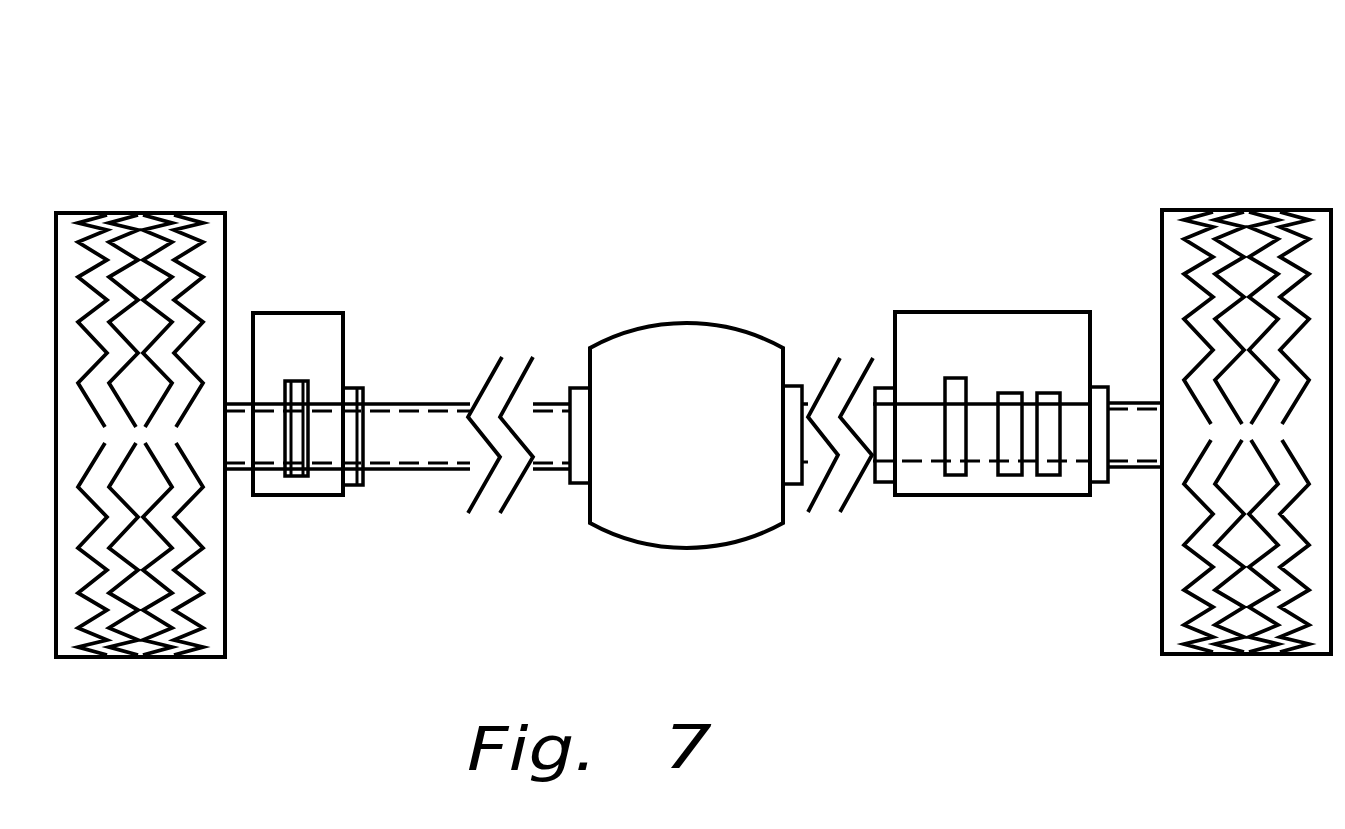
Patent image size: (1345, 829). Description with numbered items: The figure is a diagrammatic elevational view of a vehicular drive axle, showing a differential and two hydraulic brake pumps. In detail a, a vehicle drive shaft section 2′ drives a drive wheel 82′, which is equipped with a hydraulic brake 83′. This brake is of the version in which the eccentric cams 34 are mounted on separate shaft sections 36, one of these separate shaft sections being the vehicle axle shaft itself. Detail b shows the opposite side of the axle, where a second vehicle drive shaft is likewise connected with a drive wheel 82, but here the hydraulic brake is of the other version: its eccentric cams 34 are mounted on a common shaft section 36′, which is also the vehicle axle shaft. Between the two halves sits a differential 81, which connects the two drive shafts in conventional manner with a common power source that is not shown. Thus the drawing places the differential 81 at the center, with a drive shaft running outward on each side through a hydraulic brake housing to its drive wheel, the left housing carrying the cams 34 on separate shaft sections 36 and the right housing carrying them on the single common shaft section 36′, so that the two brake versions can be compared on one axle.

The drive wheel 82′ is at (157, 213).
The drive wheel 82 is at (1200, 210).
The hydraulic brake 83′ is at (298, 328).
The differential 81 is at (672, 342).
The eccentric cams 34 is at (298, 382).
The separate shaft sections 36 is at (257, 495).
The common shaft section 36′ is at (948, 378).
The vehicle drive shaft section 2′ is at (422, 448).
The detail a is at (400, 600).
The detail b is at (1023, 592).